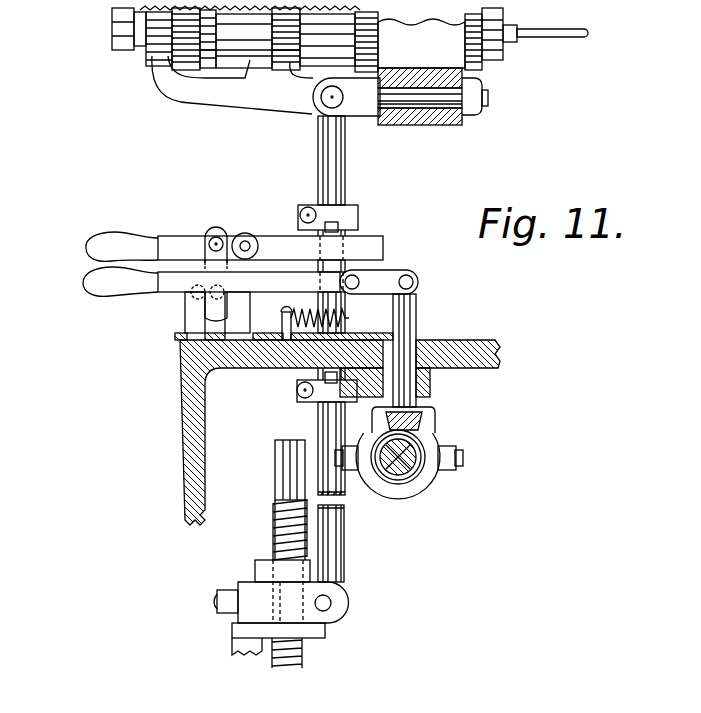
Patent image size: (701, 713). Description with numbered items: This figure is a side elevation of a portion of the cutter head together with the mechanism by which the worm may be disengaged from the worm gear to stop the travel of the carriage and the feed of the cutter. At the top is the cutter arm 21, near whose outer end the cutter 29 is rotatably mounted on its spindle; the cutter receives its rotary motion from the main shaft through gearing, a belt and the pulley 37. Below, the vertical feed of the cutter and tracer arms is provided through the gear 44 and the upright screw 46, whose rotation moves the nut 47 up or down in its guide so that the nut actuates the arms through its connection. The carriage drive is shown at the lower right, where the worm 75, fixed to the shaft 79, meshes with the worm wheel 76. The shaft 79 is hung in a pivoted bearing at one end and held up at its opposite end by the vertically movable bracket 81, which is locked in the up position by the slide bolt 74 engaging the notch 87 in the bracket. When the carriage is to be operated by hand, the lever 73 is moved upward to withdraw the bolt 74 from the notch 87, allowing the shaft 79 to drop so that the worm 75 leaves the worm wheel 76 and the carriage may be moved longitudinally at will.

The cutter arm 21 is at (432, 47).
The cutter 29 is at (548, 38).
The pulley 37 is at (287, 73).
The gear 44 is at (345, 523).
The upright screw 46 is at (280, 482).
The nut 47 is at (260, 605).
The lever 73 is at (102, 246).
The slide bolt 74 is at (312, 332).
The worm 75 is at (418, 483).
The worm wheel 76 is at (412, 424).
The shaft 79 is at (392, 483).
The vertically movable bracket 81 is at (450, 440).
The notch 87 is at (412, 337).